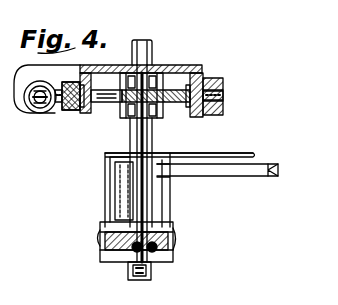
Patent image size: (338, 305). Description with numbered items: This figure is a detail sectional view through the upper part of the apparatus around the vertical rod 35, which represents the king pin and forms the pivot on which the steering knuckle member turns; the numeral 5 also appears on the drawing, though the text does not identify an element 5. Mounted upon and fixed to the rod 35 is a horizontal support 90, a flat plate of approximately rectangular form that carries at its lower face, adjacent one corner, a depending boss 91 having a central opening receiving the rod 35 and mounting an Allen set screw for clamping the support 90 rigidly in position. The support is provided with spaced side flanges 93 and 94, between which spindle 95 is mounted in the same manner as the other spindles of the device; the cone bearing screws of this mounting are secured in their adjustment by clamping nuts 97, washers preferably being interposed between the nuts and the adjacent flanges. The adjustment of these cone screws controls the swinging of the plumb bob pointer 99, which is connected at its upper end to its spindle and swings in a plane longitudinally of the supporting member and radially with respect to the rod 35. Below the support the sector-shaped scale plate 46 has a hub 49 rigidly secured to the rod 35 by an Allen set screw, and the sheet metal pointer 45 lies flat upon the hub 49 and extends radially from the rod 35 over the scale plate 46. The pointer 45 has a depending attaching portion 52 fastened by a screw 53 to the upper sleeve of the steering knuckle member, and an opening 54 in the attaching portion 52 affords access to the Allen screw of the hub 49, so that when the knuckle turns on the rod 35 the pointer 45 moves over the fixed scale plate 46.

The stem 5 is at (142, 32).
The horizontal support 90 is at (193, 65).
The depending boss 91 is at (164, 119).
The side flange 93 is at (73, 112).
The side flange 94 is at (26, 100).
The spindle 95 is at (117, 107).
The clamping nut 97 is at (63, 110).
The pointer 45 is at (252, 153).
The sector-shaped scale plate 46 is at (280, 169).
The hub 49 is at (168, 203).
The attaching portion 52 is at (108, 217).
The screw 53 is at (99, 243).
The opening 54 is at (113, 193).
The plumb bob pointer 99 is at (156, 265).
The rod 35 is at (132, 280).